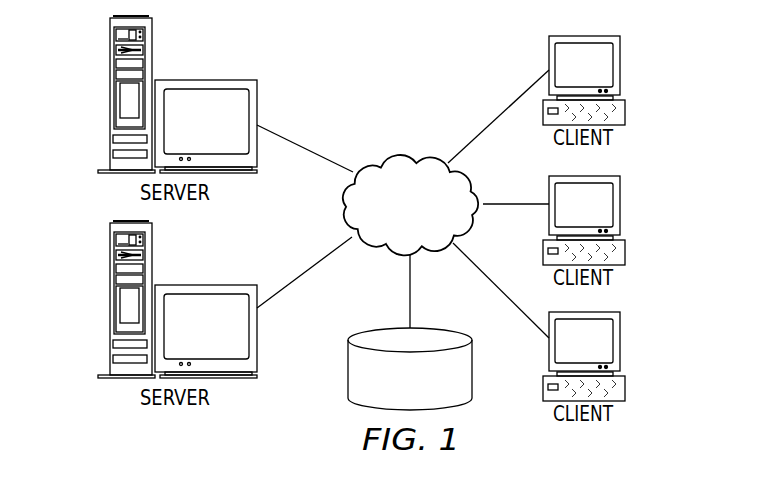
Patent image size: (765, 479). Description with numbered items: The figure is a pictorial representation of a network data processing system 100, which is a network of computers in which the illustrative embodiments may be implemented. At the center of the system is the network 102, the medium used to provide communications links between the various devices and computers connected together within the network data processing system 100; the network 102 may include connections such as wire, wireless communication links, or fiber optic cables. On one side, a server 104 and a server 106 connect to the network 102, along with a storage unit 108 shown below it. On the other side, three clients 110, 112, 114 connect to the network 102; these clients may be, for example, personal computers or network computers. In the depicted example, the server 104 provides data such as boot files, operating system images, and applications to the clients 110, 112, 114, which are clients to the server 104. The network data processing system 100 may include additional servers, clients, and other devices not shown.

The network data processing system 100 is at (462, 56).
The network 102 is at (379, 158).
The server 104 is at (110, 95).
The server 106 is at (110, 300).
The storage unit 108 is at (348, 378).
The client 110 is at (620, 65).
The client 112 is at (620, 205).
The client 114 is at (620, 343).